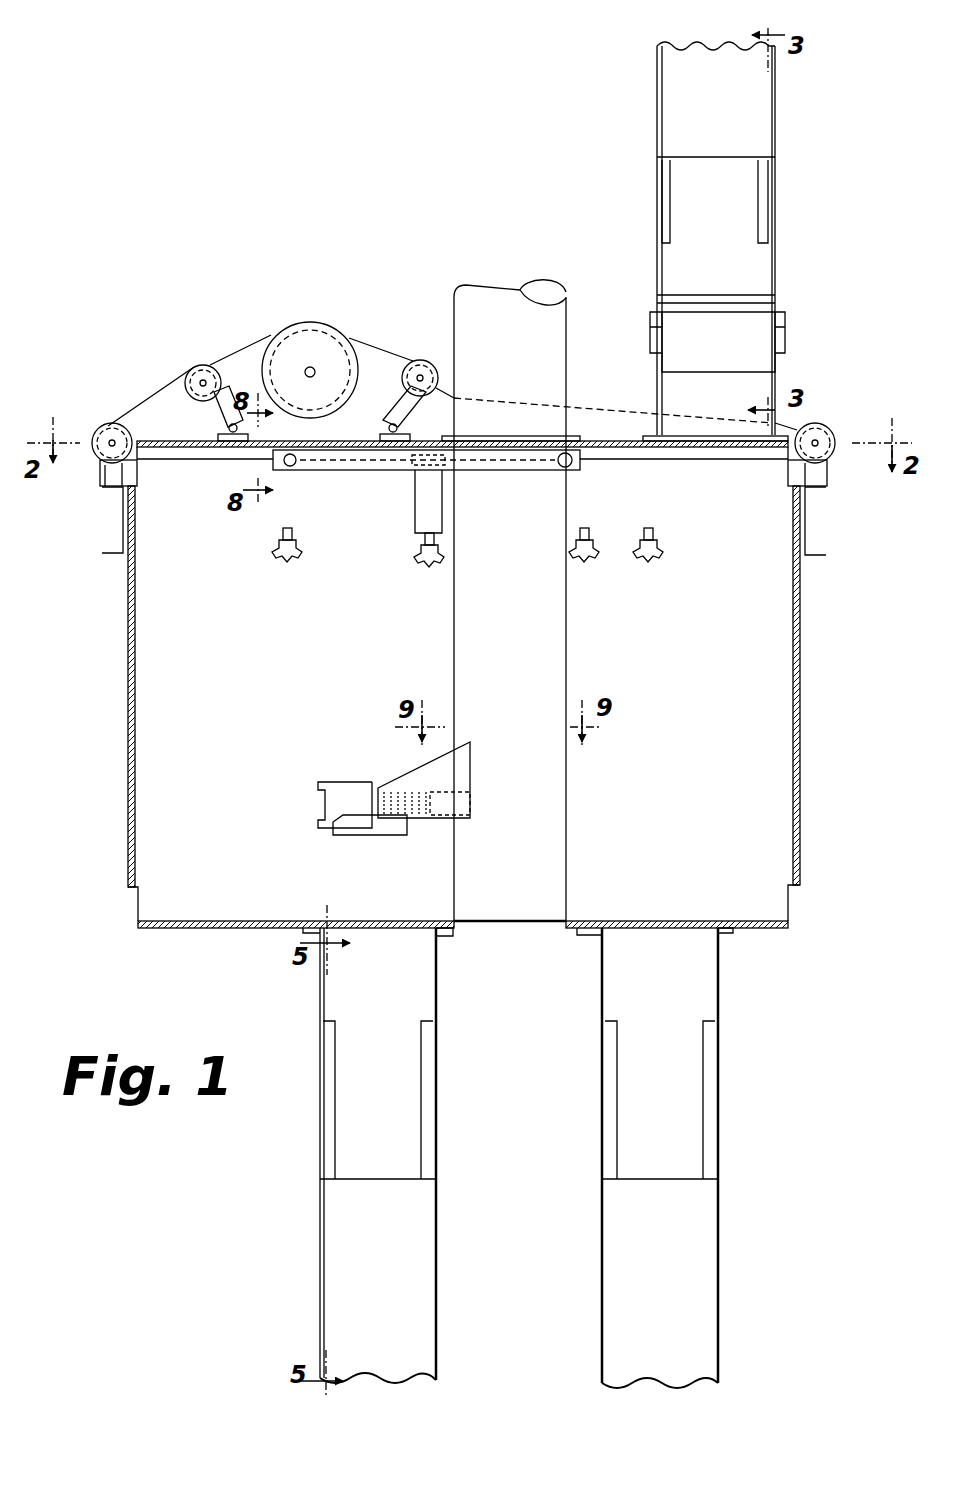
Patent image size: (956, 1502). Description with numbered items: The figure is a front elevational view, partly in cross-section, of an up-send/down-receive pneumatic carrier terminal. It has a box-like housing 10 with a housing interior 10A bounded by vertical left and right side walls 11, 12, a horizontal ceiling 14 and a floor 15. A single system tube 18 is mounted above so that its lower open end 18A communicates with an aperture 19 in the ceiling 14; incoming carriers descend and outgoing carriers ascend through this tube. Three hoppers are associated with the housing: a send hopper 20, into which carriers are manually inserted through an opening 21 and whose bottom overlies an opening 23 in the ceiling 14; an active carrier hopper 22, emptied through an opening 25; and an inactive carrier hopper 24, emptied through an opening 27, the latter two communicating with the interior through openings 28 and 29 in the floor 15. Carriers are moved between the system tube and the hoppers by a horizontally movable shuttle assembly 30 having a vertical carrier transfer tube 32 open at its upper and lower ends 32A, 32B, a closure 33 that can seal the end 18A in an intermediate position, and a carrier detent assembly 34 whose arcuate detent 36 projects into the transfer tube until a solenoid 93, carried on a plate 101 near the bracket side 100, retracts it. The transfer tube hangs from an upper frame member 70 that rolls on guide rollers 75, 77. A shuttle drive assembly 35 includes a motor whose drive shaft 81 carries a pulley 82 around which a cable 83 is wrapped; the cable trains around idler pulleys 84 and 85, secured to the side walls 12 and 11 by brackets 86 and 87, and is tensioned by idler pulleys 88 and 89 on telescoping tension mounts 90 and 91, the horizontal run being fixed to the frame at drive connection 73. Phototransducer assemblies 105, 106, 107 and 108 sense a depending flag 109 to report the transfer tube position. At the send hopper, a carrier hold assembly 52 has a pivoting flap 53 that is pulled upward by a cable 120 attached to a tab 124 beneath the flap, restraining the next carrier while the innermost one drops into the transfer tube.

The housing 10 is at (123, 850).
The housing interior 10A is at (193, 685).
The left side wall 11 is at (128, 655).
The right side wall 12 is at (800, 688).
The housing ceiling 14 is at (190, 447).
The housing floor 15 is at (227, 921).
The system tube 18 is at (555, 322).
The lower open end of system tube 18A is at (567, 440).
The ceiling aperture 19 is at (470, 440).
The send hopper 20 is at (807, 212).
The send hopper opening 21 is at (735, 187).
The active carrier hopper 22 is at (722, 1150).
The ceiling opening 23 is at (738, 450).
The inactive carrier hopper 24 is at (302, 1178).
The active hopper opening 25 is at (682, 1017).
The inactive hopper opening 27 is at (402, 1097).
The floor opening 28 is at (658, 921).
The floor opening 29 is at (363, 921).
The shuttle assembly 30 is at (393, 505).
The carrier transfer tube 32 is at (568, 660).
The upper end of transfer tube 32A is at (540, 453).
The lower end of transfer tube 32B is at (568, 920).
The closure 33 is at (348, 449).
The carrier detent assembly 34 is at (370, 767).
The shuttle drive assembly 35 is at (321, 312).
The detent 36 is at (477, 797).
The carrier hold assembly 52 is at (780, 342).
The flap 53 is at (747, 382).
The upper frame member 70 is at (492, 474).
The drive connection 73 is at (410, 486).
The guide roller 75 is at (290, 473).
The guide roller 77 is at (580, 462).
The drive shaft 81 is at (318, 358).
The pulley 82 is at (353, 333).
The cable 83 is at (152, 452).
The idler pulley 84 is at (830, 433).
The idler pulley 85 is at (112, 427).
The bracket 86 is at (827, 490).
The bracket 87 is at (113, 493).
The idler pulley 88 is at (198, 363).
The idler pulley 89 is at (437, 350).
The telescoping tension mount 90 is at (215, 417).
The telescoping tension mount 91 is at (393, 420).
The solenoid 93 is at (333, 803).
The bracket side 100 is at (447, 762).
The plate 101 is at (347, 837).
The phototransducer assembly 105 is at (293, 533).
The phototransducer assembly 106 is at (428, 548).
The phototransducer assembly 107 is at (577, 532).
The phototransducer assembly 108 is at (658, 530).
The flag 109 is at (447, 523).
The cable 120 is at (707, 360).
The tab 124 is at (712, 352).